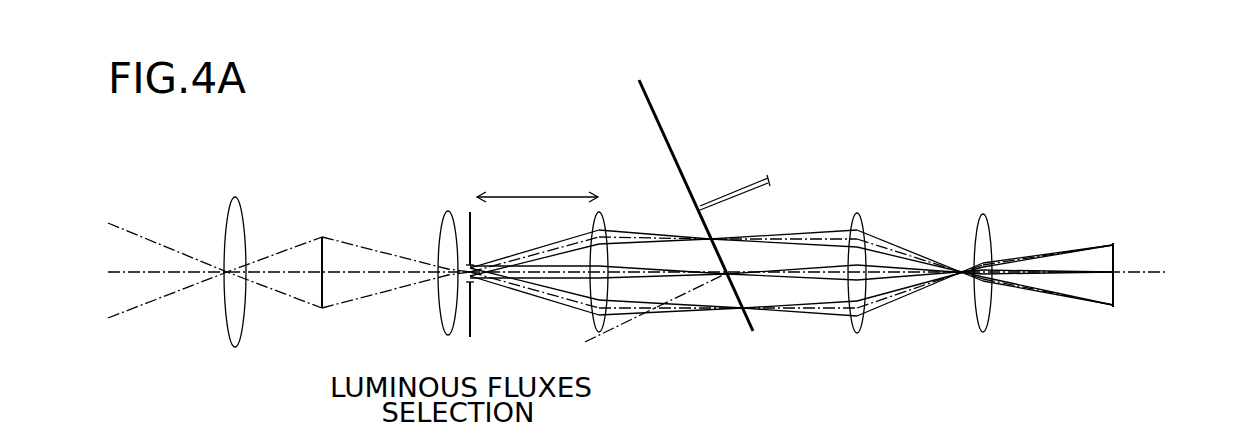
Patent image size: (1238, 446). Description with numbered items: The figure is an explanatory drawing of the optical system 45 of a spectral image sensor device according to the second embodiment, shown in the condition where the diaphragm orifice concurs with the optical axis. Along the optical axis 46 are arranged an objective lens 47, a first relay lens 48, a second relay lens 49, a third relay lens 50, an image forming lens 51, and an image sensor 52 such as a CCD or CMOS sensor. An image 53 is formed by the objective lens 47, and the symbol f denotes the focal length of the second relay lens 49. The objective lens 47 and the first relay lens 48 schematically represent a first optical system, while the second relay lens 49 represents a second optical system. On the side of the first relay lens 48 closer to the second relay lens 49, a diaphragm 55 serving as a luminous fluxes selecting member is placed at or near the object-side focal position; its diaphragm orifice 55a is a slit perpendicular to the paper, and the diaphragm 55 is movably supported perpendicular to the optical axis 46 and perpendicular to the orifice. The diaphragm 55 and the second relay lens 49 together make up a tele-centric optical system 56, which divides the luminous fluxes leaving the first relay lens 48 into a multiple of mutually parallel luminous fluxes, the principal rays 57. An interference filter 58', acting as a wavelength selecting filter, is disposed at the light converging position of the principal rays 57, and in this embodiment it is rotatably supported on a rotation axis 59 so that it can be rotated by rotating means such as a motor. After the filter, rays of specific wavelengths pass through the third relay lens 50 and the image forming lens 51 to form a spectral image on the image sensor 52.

The optical system 45 is at (393, 128).
The optical axis 46 is at (158, 272).
The objective lens 47 is at (228, 330).
The first relay lens 48 is at (441, 313).
The second relay lens 49 is at (607, 323).
The third relay lens 50 is at (863, 328).
The image forming lens 51 is at (988, 328).
The image sensor 52 is at (1113, 268).
The image 53 is at (323, 264).
The diaphragm 55 is at (473, 320).
The diaphragm orifice 55a is at (474, 263).
The tele-centric optical system 56 is at (558, 187).
The principal rays 57 is at (667, 312).
The interference filter 58' is at (697, 205).
The rotation axis 59 is at (745, 177).